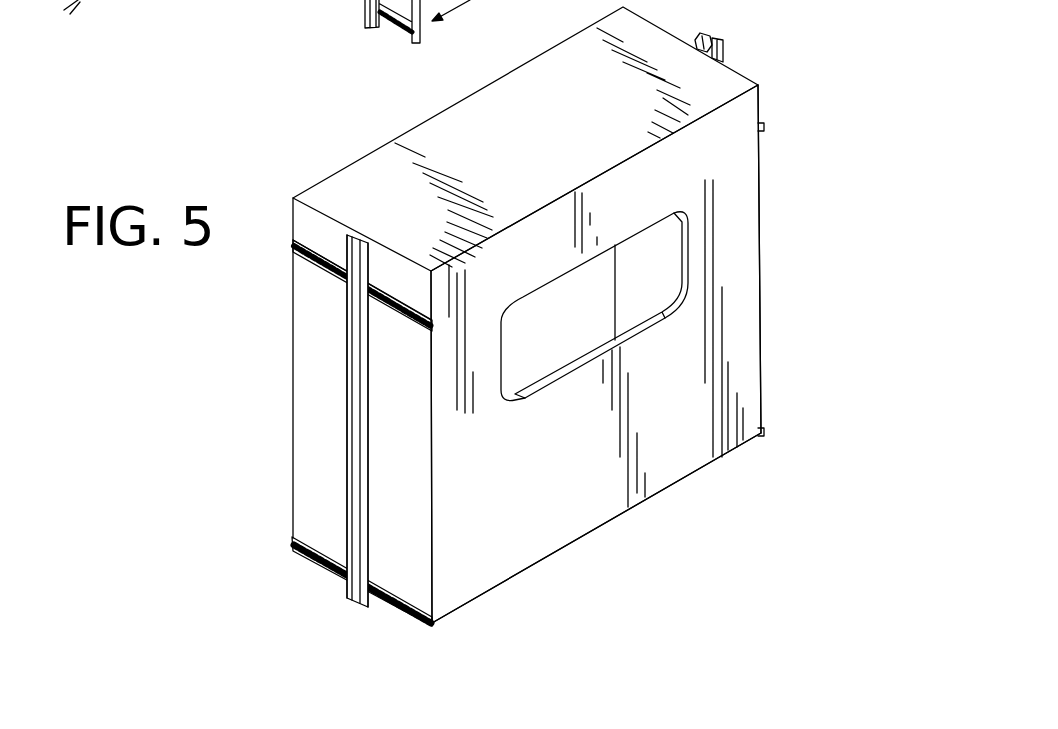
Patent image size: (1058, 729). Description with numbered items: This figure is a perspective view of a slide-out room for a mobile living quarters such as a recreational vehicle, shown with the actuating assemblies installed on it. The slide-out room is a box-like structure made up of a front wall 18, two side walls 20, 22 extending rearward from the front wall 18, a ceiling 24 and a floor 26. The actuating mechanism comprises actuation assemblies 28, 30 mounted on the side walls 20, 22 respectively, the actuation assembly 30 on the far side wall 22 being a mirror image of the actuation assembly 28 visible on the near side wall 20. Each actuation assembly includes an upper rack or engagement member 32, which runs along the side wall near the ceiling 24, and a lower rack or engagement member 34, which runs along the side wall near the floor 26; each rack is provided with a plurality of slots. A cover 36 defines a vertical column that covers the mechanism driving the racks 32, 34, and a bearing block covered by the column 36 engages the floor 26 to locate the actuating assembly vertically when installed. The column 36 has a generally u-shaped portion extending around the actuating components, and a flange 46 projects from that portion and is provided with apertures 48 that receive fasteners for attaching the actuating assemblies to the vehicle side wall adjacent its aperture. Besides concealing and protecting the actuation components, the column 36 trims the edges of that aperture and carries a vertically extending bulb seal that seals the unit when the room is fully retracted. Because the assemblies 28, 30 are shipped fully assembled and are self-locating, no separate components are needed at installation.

The front wall 18 is at (603, 466).
The side wall 20 is at (308, 358).
The side wall 22 is at (760, 240).
The ceiling 24 is at (557, 150).
The floor 26 is at (570, 545).
The actuation assembly 28 is at (316, 284).
The actuation assembly 30 is at (722, 45).
The upper rack or engagement member 32 is at (408, 318).
The lower rack or engagement member 34 is at (400, 607).
The cover or column 36 is at (375, 432).
The flange 46 is at (357, 375).
The apertures 48 is at (357, 452).